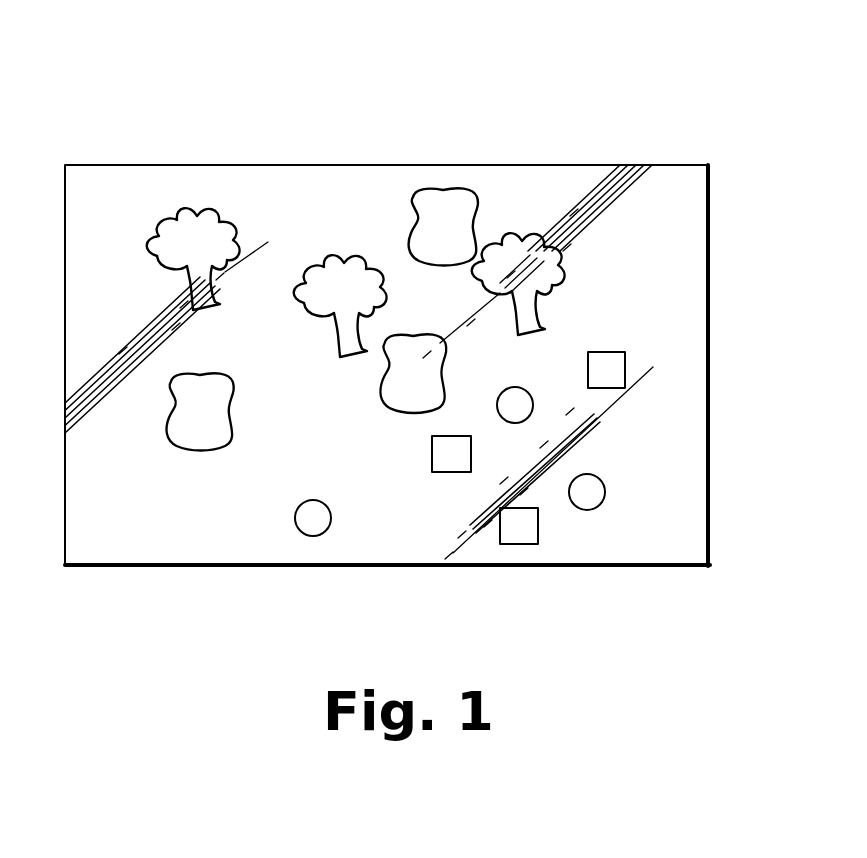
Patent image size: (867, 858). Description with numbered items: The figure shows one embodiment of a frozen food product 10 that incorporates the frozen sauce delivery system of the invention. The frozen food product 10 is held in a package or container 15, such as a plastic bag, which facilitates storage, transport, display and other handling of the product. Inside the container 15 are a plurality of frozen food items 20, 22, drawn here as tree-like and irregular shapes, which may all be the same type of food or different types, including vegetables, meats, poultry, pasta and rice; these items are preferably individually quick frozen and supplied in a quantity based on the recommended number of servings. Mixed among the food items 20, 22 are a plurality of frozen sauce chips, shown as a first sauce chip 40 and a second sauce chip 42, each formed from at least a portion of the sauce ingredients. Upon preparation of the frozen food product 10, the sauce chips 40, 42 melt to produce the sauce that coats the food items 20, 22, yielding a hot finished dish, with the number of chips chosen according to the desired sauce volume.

The frozen food product 10 is at (145, 84).
The package or container 15 is at (115, 567).
The frozen food item 20 is at (191, 207).
The frozen food item 22 is at (413, 333).
The first sauce chip 40 is at (313, 536).
The second sauce chip 42 is at (626, 369).